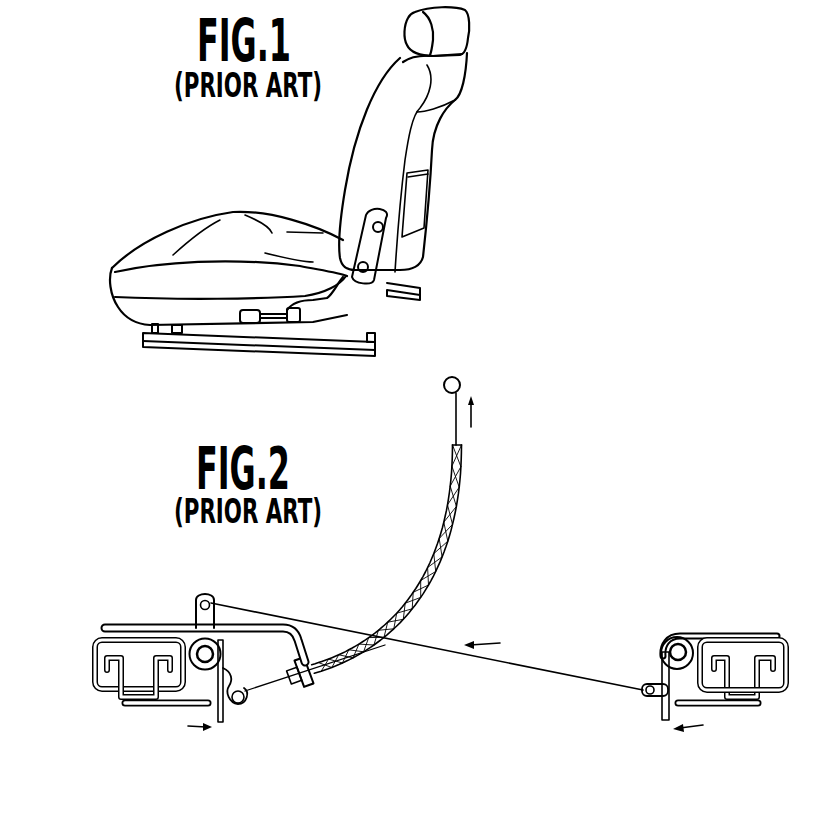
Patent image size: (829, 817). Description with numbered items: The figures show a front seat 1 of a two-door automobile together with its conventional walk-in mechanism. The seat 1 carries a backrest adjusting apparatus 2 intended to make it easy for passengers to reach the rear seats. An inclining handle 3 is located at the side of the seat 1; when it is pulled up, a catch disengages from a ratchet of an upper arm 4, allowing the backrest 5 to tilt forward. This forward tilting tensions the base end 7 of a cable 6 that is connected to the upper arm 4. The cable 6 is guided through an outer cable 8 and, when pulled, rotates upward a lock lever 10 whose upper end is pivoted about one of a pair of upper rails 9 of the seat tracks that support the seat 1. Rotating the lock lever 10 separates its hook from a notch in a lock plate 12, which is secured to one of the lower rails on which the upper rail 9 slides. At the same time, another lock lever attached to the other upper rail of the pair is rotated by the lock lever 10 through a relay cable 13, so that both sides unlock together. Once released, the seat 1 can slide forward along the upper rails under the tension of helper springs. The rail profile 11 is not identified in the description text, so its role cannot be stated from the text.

In FIG. 1, the front seat 1 is at (262, 210).
In FIG. 1, the backrest adjusting apparatus 2 is at (383, 313).
In FIG. 1, the inclining handle 3 is at (237, 312).
In FIG. 1, the upper arm 4 is at (377, 243).
In FIG. 1, the backrest 5 is at (438, 147).
In FIG. 2, the cable 6 is at (460, 440).
In FIG. 2, the base end 7 is at (460, 385).
In FIG. 2, the outer cable 8 is at (440, 562).
In FIG. 2, the upper rail 9 is at (100, 658).
In FIG. 2, the lock lever 10 is at (225, 713).
In FIG. 2, the upper rail 11 is at (120, 698).
In FIG. 2, the lock plate 12 is at (167, 706).
In FIG. 2, the relay cable 13 is at (323, 627).